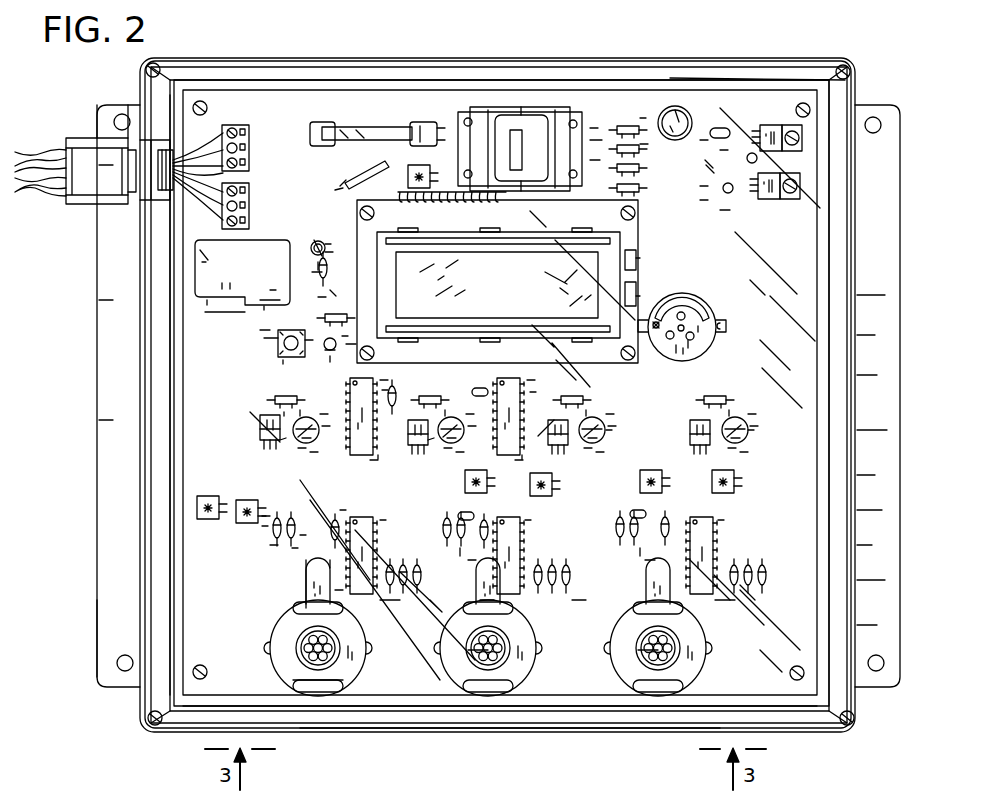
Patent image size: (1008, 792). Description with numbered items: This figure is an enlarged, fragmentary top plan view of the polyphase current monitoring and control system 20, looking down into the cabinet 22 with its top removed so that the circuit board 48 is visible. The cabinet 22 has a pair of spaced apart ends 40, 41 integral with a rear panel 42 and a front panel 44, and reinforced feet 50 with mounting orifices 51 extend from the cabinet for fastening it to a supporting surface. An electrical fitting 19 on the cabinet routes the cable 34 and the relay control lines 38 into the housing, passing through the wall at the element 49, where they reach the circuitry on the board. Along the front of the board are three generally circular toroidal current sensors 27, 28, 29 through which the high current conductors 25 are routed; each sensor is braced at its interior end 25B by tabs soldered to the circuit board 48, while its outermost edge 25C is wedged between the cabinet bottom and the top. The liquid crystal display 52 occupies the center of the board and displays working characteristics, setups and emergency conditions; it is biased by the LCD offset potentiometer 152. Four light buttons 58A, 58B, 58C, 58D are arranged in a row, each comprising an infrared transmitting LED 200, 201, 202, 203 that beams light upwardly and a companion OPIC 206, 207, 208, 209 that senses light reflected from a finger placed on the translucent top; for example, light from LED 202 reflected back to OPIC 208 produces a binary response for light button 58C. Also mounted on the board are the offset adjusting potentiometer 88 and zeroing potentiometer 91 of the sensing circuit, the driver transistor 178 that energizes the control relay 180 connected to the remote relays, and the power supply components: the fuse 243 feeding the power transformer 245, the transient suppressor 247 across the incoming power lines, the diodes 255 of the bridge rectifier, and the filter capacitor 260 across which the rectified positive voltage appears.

The electrical fitting 19 is at (86, 150).
The polyphase current monitoring and control system 20 is at (475, 50).
The cabinet 22 is at (345, 54).
The high current conductors 25 is at (470, 652).
The interior end of current sensors 25B is at (308, 580).
The outermost edges of current sensors 25C is at (313, 700).
The toroidal current sensor 27 is at (343, 697).
The toroidal current sensor 28 is at (495, 705).
The toroidal current sensor 29 is at (665, 705).
The cable / terminal 34 is at (215, 122).
The lines 38 is at (192, 212).
The cabinet end 40 is at (150, 364).
The cabinet end 41 is at (861, 270).
The rear panel 42 is at (620, 60).
The front panel 44 is at (490, 731).
The circuit board 48 is at (760, 263).
The grommet 49 is at (173, 96).
The reinforced feet 50 is at (118, 633).
The mounting orifices 51 is at (117, 664).
The liquid crystal display 52 is at (643, 254).
The light button 58A is at (278, 443).
The light button 58B is at (432, 440).
The light button 58C is at (605, 422).
The light button 58D is at (766, 392).
The offset adjusting potentiometer 88 is at (213, 522).
The zeroing potentiometer 91 is at (254, 525).
The LCD offset potentiometer 152 is at (468, 487).
The driver transistor 178 is at (310, 244).
The control relay 180 is at (278, 290).
The infrared transmitting LED 200 is at (313, 424).
The infrared transmitting LED 201 is at (454, 420).
The infrared transmitting LED 202 is at (600, 420).
The infrared transmitting LED 203 is at (737, 442).
The OPIC 206 is at (258, 425).
The OPIC 207 is at (407, 427).
The OPIC 208 is at (568, 428).
The OPIC 209 is at (690, 430).
The fuse 243 is at (375, 140).
The power transformer 245 is at (518, 107).
The transient suppressor 247 is at (345, 178).
The diodes 255 is at (638, 151).
The filter capacitor 260 is at (694, 112).